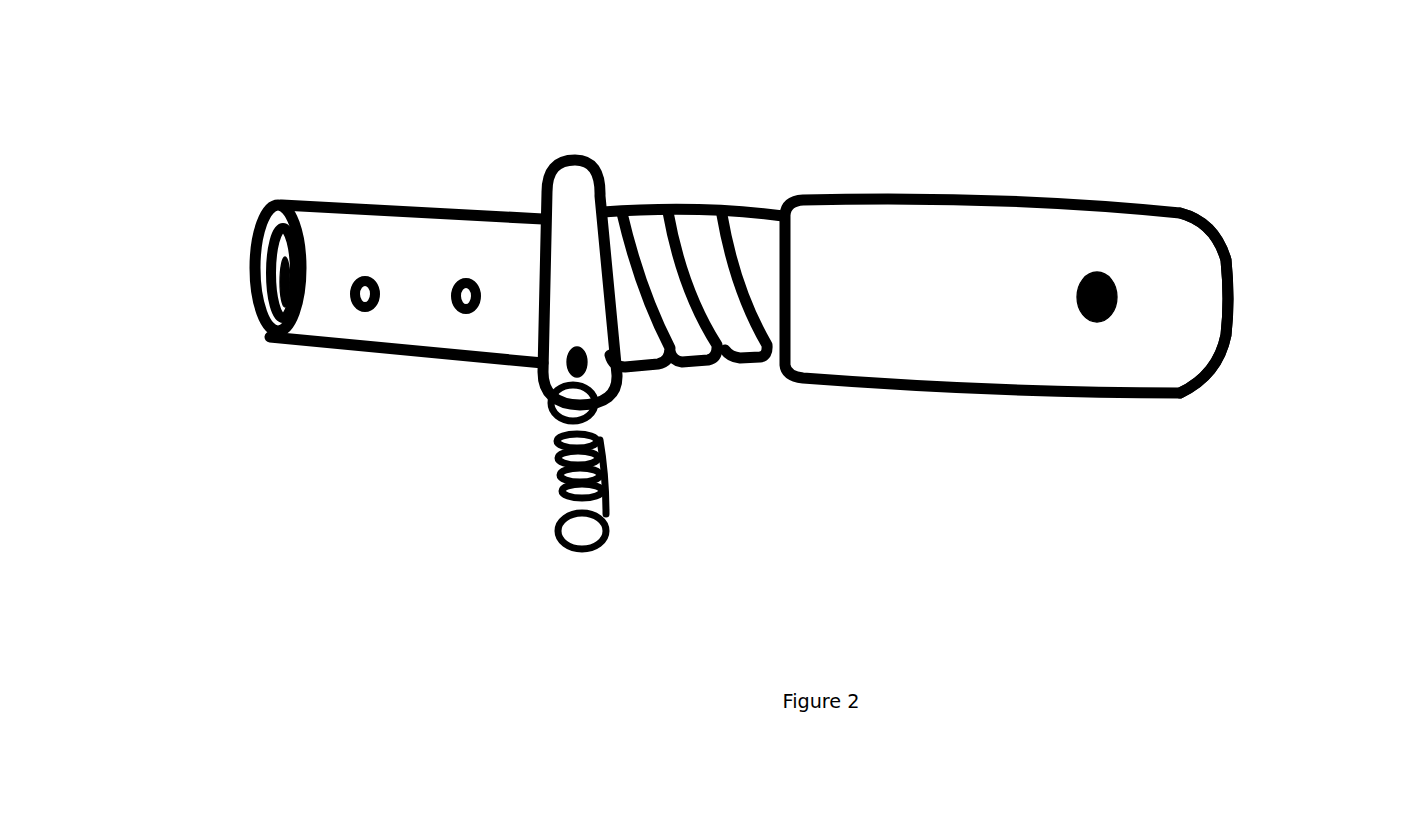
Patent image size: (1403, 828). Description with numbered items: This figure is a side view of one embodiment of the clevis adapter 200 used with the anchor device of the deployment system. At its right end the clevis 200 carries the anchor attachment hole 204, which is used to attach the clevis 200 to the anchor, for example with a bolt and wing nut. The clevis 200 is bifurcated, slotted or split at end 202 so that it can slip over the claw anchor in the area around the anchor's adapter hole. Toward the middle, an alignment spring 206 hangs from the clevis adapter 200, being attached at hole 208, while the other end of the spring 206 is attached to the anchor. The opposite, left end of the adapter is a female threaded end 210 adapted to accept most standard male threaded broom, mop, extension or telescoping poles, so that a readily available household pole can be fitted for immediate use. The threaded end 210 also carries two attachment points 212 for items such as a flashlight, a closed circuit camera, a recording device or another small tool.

The clevis adapter 200 is at (1014, 163).
The bifurcated end 202 is at (1251, 335).
The anchor attachment hole 204 is at (1100, 344).
The alignment spring 206 is at (620, 475).
The spring attachment hole 208 is at (561, 377).
The female threaded end 210 is at (258, 272).
The attachment points 212 is at (463, 260).